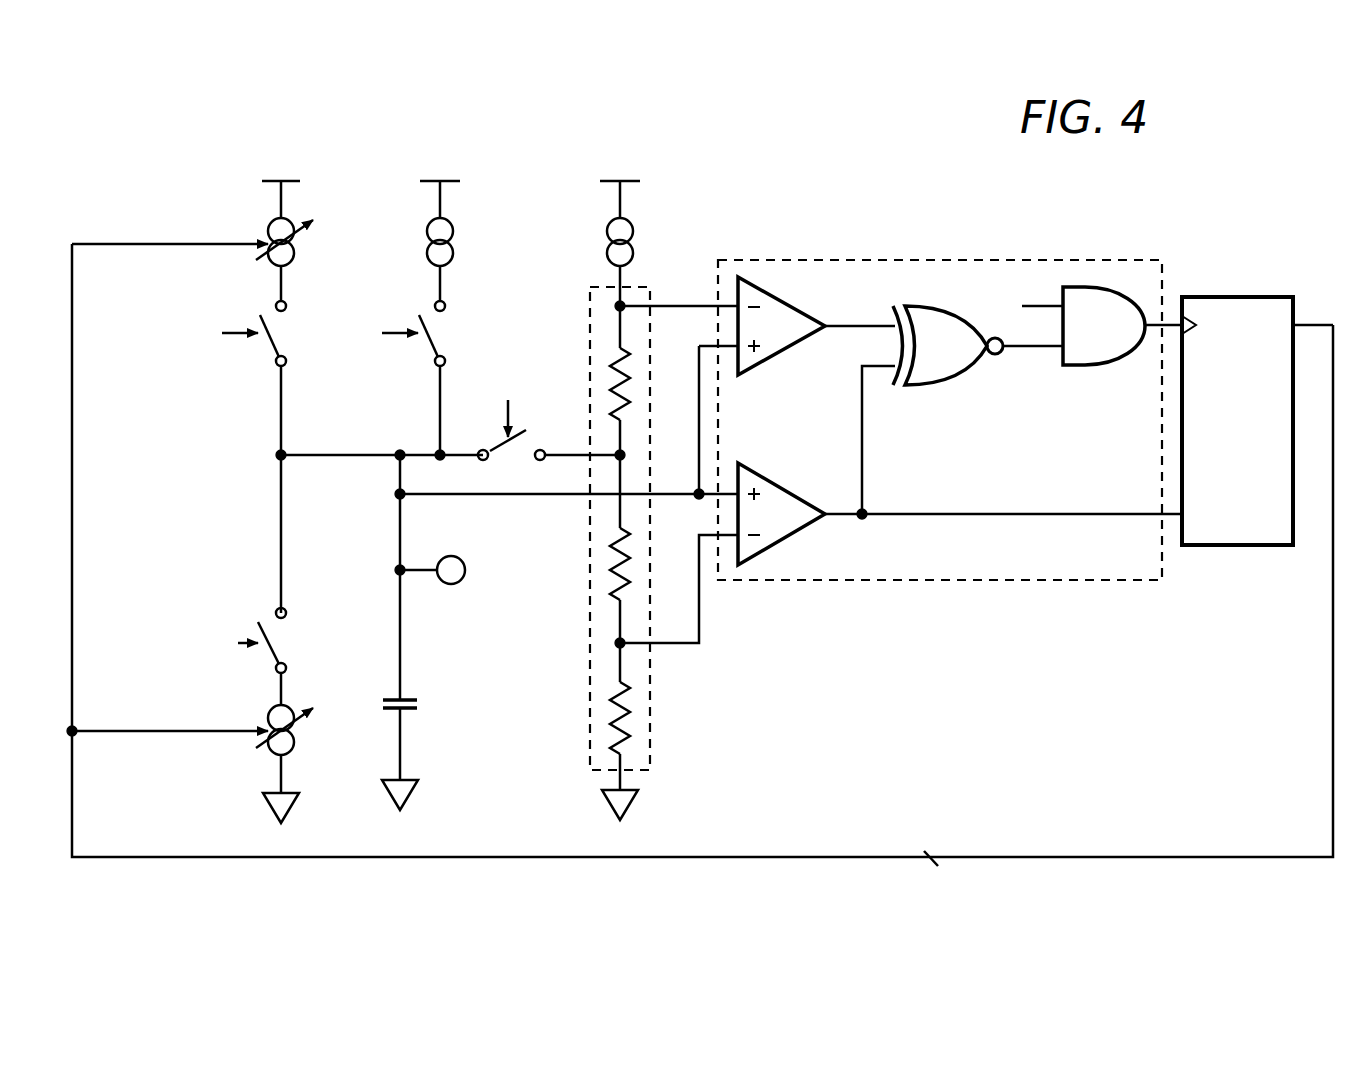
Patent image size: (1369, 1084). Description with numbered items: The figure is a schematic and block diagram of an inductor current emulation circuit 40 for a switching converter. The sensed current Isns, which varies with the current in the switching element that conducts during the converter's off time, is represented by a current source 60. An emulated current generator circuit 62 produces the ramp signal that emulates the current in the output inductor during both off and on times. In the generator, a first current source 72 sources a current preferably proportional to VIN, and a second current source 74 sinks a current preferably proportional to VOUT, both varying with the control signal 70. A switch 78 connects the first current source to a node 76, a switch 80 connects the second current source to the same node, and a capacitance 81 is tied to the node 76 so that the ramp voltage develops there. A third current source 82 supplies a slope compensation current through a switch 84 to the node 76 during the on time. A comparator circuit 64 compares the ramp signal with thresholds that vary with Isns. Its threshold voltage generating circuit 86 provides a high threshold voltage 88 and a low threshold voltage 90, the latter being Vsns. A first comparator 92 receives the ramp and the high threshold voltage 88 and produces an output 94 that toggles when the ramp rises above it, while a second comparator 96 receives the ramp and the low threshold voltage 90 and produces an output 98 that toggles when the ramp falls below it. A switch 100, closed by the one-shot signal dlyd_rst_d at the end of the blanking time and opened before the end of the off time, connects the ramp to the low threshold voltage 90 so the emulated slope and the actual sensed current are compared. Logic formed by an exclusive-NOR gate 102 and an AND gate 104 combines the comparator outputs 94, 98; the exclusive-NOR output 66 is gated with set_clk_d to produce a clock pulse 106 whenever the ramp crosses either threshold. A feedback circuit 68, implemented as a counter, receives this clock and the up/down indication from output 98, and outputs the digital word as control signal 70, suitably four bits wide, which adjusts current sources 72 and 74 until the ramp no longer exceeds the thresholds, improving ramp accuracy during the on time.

The inductor current emulation circuit 40 is at (1243, 228).
The emulated current generator circuit 62 is at (374, 163).
The first current source 72 is at (268, 214).
The third current source 82 is at (428, 214).
The current source 60 is at (610, 214).
The switch 78 is at (255, 352).
The switch 84 is at (455, 333).
The node 76 is at (400, 448).
The switch 100 is at (512, 470).
The switch 80 is at (252, 613).
The second current source 74 is at (293, 710).
The capacitance 81 is at (412, 722).
The threshold voltage generating circuit 86 is at (652, 730).
The high threshold voltage 88 is at (707, 305).
The low threshold voltage 90 is at (680, 648).
The comparator circuit 64 is at (920, 582).
The first comparator 92 is at (788, 310).
The output 94 is at (850, 328).
The second comparator 96 is at (778, 482).
The output 98 is at (874, 500).
The exclusive-NOR gate 102 is at (940, 385).
The output 66 is at (1025, 352).
The AND gate 104 is at (1097, 368).
The clock pulse 106 is at (1152, 320).
The feedback circuit 68 is at (1245, 548).
The control signal 70 is at (1320, 650).